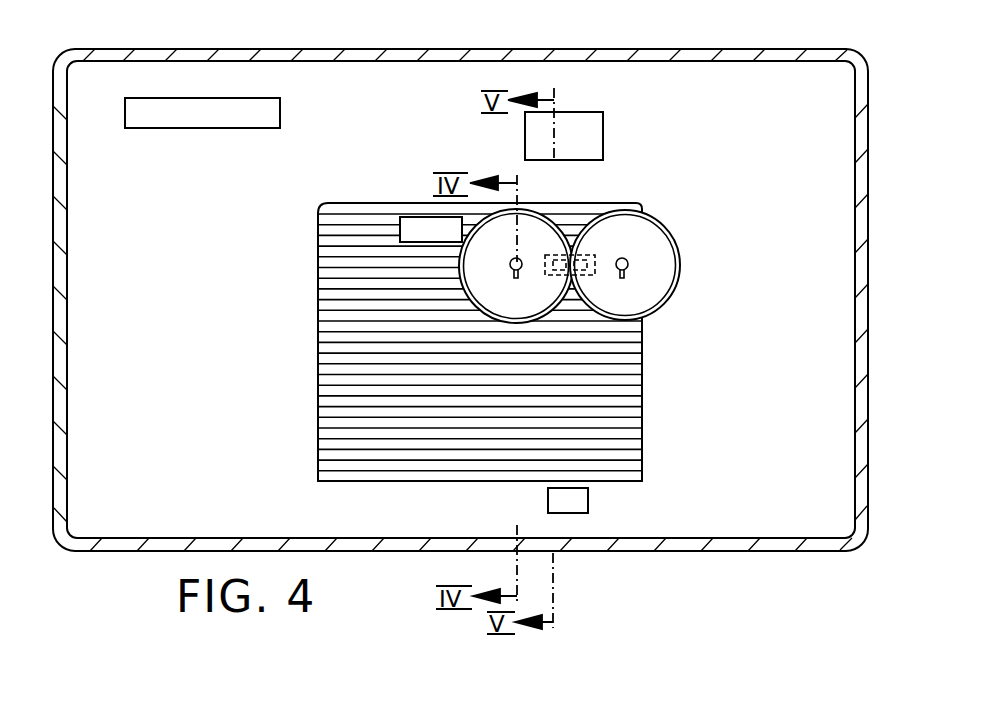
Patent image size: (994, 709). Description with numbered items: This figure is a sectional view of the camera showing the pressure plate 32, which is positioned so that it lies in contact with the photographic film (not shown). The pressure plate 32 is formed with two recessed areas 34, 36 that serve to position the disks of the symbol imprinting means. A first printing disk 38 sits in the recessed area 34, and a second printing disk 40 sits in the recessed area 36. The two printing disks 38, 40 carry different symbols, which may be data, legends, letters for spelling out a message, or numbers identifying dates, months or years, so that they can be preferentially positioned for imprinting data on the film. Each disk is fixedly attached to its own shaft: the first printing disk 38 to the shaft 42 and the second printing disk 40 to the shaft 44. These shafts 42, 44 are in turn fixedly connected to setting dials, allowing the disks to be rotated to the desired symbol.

The pressure plate 32 is at (325, 285).
The recessed area 34 is at (412, 250).
The recessed area 36 is at (642, 331).
The first printing disk 38 is at (483, 232).
The second printing disk 40 is at (620, 243).
The shaft 42 is at (520, 260).
The shaft 44 is at (627, 265).